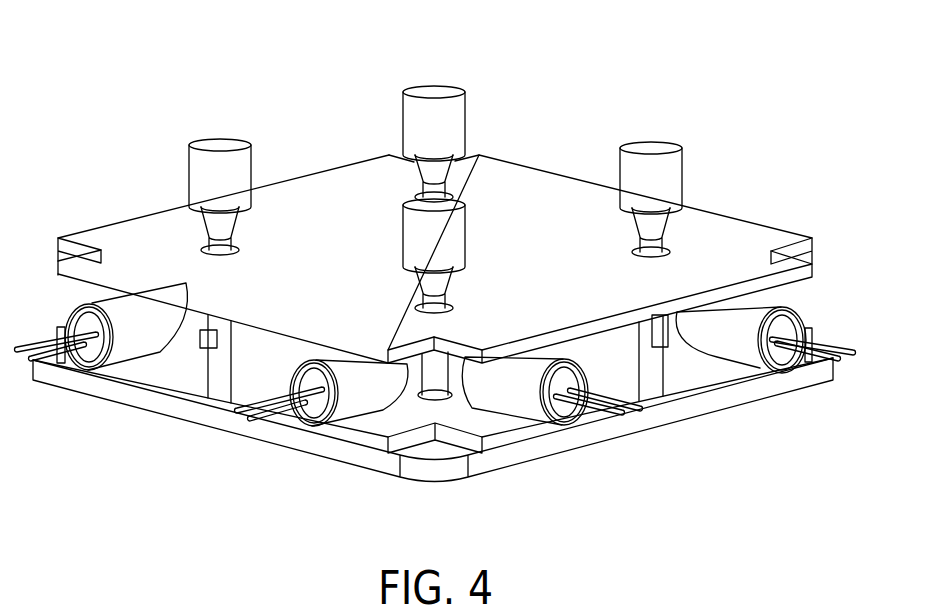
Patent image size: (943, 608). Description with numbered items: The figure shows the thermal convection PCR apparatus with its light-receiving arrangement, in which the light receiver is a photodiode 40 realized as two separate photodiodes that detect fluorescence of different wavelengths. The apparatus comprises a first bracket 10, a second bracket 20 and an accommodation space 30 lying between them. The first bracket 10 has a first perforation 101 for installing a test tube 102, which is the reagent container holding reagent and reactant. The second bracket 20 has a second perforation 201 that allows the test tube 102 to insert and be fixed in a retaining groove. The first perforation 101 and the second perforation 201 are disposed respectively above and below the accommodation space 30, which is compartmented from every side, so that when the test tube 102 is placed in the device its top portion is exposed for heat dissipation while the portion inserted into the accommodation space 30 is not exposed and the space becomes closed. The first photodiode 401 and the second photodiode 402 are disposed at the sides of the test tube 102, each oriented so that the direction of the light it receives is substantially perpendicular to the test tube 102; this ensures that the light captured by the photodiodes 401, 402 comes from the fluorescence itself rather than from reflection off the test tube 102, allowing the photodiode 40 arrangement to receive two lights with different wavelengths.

The first bracket 10 is at (757, 238).
The first perforation 101 is at (450, 188).
The test tube 102 is at (432, 92).
The second bracket 20 is at (833, 368).
The second perforation 201 is at (205, 336).
The accommodation space 30 is at (740, 323).
The photodiode 40 is at (436, 458).
The first photodiode 401 is at (63, 363).
The second photodiode 402 is at (287, 417).